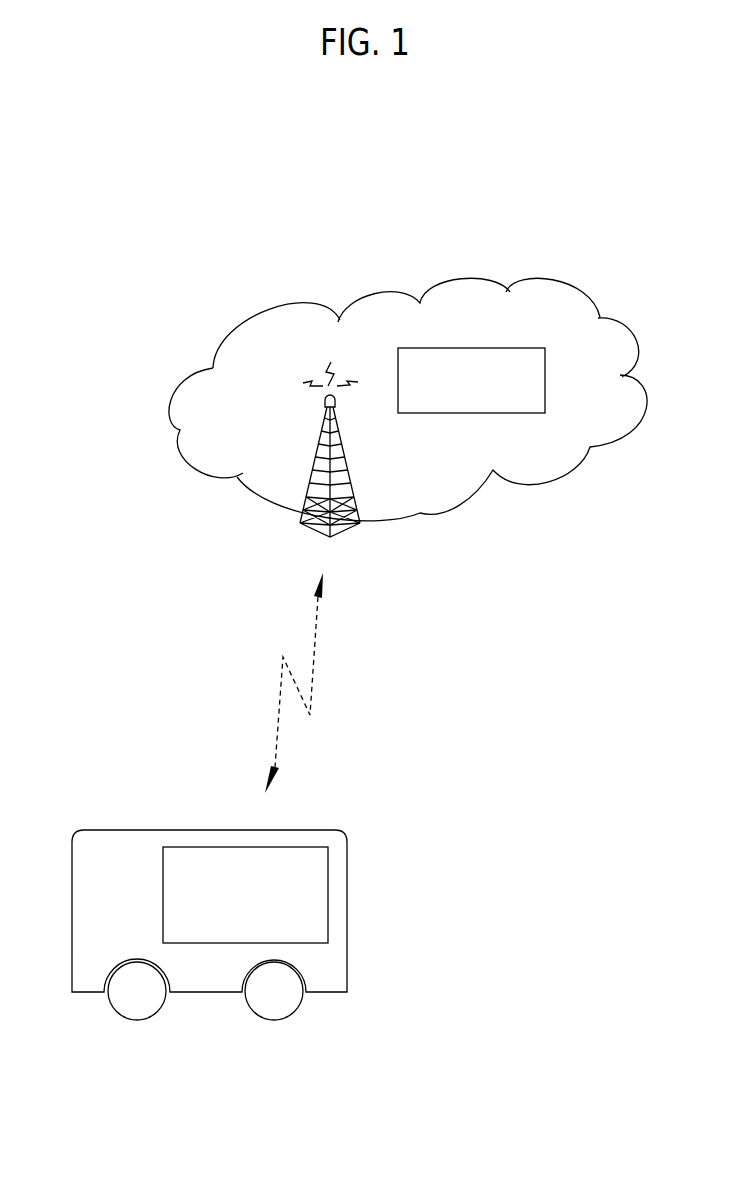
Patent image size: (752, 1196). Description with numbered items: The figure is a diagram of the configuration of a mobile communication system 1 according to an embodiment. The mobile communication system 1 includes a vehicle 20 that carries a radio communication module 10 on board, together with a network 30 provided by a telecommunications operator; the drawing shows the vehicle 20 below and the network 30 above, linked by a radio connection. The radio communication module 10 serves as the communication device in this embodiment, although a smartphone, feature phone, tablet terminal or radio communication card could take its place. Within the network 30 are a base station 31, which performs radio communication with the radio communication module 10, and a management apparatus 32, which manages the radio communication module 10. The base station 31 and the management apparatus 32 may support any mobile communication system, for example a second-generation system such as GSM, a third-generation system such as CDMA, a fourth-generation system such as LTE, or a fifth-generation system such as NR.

The mobile communication system 1 is at (198, 164).
The radio communication module 10 is at (217, 943).
The vehicle 20 is at (307, 829).
The network 30 is at (549, 283).
The base station 31 is at (345, 456).
The management apparatus 32 is at (510, 347).